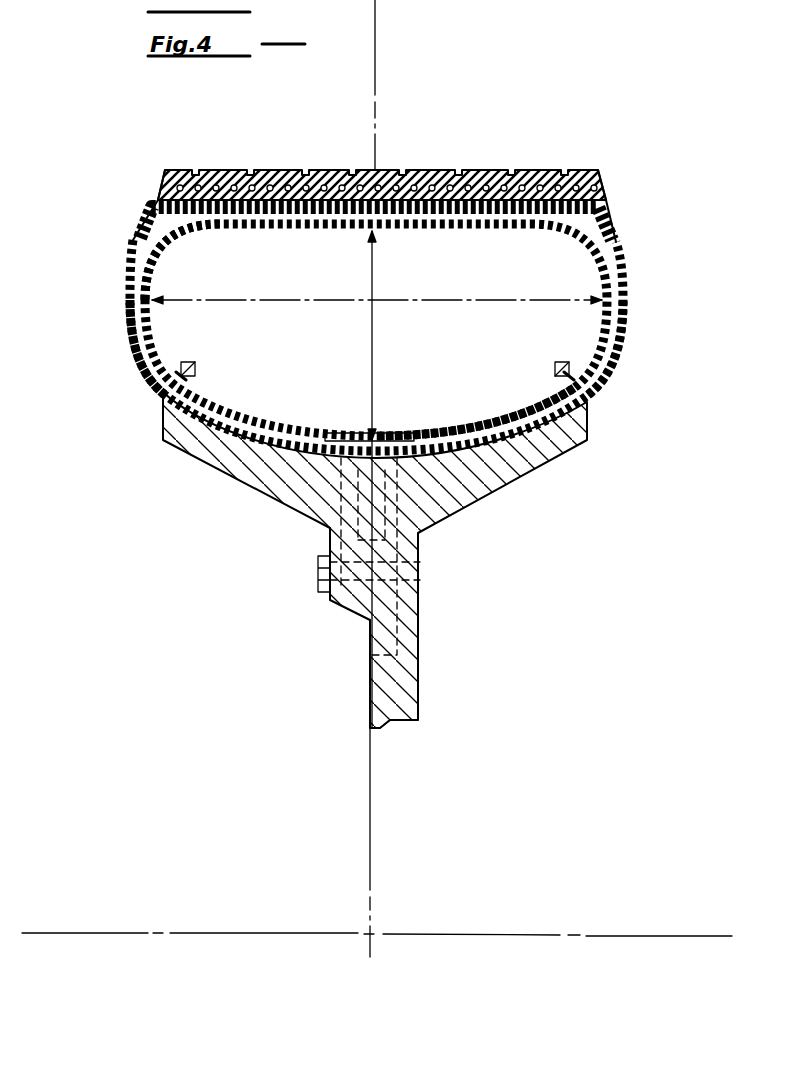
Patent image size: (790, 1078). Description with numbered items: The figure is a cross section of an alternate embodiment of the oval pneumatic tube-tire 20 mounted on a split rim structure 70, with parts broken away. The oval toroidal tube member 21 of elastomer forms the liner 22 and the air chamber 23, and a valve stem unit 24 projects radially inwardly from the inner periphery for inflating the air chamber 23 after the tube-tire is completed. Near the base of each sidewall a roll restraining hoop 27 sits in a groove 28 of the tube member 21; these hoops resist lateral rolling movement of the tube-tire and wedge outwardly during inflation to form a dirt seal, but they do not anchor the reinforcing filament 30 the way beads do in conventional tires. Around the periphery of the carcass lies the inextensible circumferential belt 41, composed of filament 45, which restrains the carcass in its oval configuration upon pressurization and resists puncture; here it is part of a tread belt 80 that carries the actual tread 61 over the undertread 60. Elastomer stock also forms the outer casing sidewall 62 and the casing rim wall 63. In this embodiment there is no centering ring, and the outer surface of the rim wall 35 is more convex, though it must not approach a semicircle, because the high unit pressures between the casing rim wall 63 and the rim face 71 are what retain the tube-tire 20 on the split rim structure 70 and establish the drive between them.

The tube-tire 20 is at (226, 170).
The tube member 21 is at (258, 412).
The liner 22 is at (448, 228).
The air chamber 23 is at (322, 350).
The valve stem unit 24 is at (342, 524).
The roll restraining hoop 27 is at (182, 373).
The groove 28 is at (192, 362).
The reinforcing filament 30 is at (125, 279).
The rim wall 35 is at (388, 442).
The inextensible circumferential belt 41 is at (590, 176).
The filament 45 is at (272, 186).
The undertread 60 is at (150, 225).
The tread 61 is at (382, 170).
The outer casing sidewall 62 is at (127, 322).
The casing rim wall 63 is at (496, 432).
The split rim structure 70 is at (370, 652).
The rim face 71 is at (592, 424).
The tread belt 80 is at (386, 172).